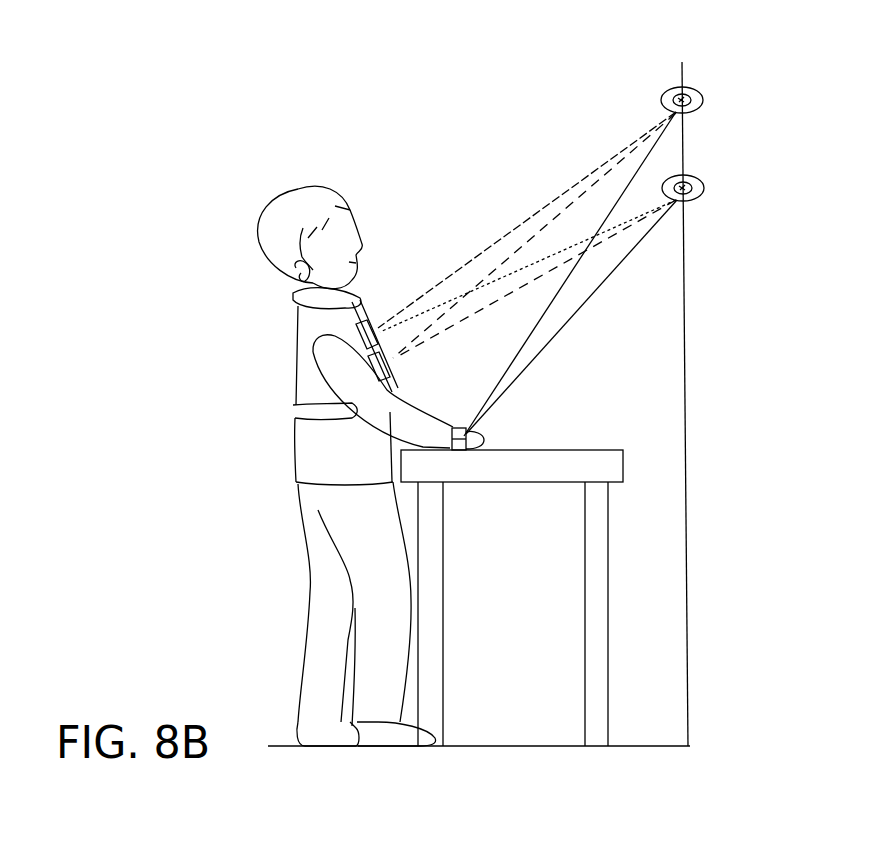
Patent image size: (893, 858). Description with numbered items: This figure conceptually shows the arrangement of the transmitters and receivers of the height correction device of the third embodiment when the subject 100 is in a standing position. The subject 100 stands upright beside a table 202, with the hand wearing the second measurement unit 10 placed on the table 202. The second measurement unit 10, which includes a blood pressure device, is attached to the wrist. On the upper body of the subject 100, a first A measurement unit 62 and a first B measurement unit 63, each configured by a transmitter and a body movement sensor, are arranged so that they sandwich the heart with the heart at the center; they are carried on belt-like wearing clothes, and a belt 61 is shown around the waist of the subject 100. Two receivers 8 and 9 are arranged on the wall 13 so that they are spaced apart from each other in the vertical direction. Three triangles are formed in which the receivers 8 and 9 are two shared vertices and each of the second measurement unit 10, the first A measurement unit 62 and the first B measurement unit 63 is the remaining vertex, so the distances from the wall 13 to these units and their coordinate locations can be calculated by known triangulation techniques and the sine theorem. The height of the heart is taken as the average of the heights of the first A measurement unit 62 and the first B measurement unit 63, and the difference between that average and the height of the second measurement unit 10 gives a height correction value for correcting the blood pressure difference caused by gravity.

The receiver 8 is at (704, 100).
The receiver 9 is at (705, 188).
The wall 13 is at (686, 292).
The second measurement unit 10 is at (458, 425).
The belt 61 is at (293, 410).
The first A measurement unit 62 is at (373, 322).
The first B measurement unit 63 is at (388, 378).
The subject 100 is at (295, 441).
The table 202 is at (610, 450).